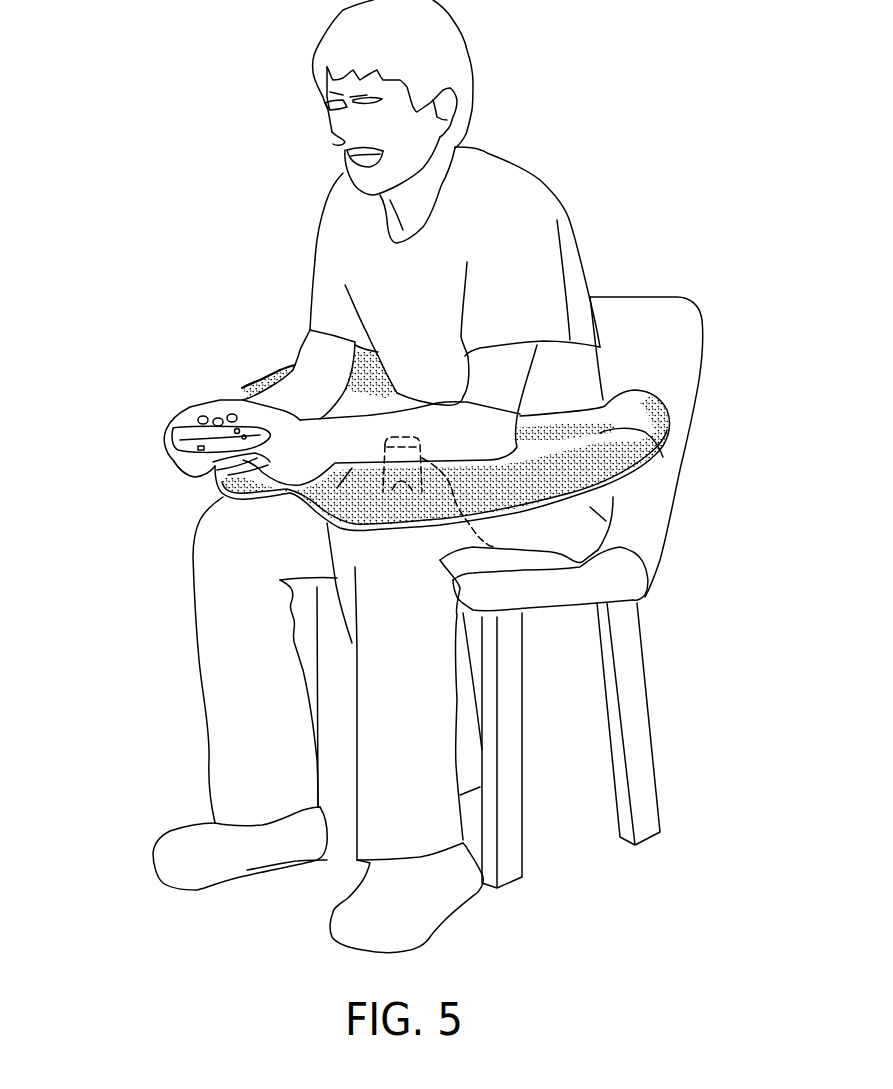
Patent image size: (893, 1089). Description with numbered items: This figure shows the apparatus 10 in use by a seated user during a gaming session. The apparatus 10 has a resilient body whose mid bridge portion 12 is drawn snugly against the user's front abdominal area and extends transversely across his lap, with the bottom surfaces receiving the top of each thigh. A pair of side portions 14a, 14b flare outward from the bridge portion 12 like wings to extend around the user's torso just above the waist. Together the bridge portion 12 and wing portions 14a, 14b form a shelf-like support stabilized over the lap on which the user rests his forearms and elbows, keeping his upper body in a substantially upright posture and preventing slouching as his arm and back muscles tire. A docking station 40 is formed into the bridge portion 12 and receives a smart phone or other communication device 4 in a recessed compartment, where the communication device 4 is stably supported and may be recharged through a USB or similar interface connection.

The apparatus 10 is at (420, 440).
The bridge portion 12 is at (327, 514).
The side portion 14a is at (663, 457).
The side portion 14b is at (243, 389).
The communication device 4 is at (495, 547).
The docking station 40 is at (390, 490).